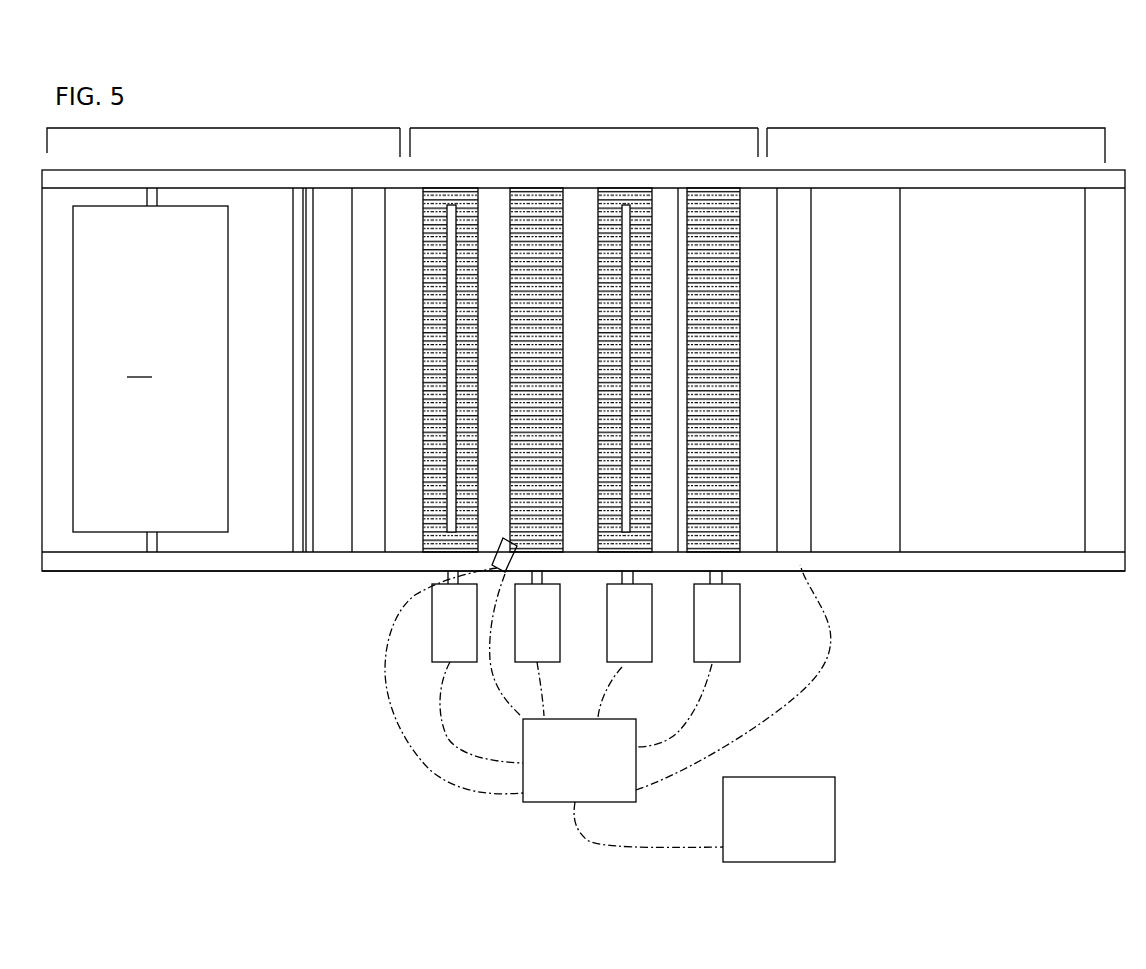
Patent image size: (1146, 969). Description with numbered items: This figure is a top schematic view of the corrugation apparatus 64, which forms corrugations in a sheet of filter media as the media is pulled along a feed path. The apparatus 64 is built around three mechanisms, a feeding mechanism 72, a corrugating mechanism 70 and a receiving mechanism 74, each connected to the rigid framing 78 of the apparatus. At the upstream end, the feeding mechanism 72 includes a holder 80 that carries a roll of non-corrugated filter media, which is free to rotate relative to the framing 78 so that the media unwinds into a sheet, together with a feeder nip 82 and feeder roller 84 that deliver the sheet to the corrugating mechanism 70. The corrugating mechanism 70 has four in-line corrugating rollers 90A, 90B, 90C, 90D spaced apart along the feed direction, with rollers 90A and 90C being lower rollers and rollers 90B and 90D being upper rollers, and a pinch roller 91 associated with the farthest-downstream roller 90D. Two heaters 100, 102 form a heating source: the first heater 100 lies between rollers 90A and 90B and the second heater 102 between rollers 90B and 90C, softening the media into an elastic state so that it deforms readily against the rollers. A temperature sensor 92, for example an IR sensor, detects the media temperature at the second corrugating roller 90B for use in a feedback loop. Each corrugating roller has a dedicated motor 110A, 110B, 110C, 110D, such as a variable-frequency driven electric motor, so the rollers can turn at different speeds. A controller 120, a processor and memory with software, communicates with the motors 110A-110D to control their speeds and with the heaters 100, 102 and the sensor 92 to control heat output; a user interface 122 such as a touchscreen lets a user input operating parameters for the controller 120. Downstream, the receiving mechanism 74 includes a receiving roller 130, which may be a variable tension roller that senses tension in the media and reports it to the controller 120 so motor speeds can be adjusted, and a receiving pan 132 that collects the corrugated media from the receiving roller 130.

The corrugation apparatus 64 is at (103, 677).
The corrugating mechanism 70 is at (553, 130).
The feeding mechanism 72 is at (245, 128).
The receiving mechanism 74 is at (930, 128).
The rigid framing 78 is at (863, 558).
The holder 80 is at (160, 541).
The feeder nip 82 is at (293, 428).
The feeder roller 84 is at (352, 457).
The first corrugating roller 90A is at (405, 343).
The second corrugating roller 90B is at (523, 243).
The third corrugating roller 90C is at (831, 351).
The fourth corrugating roller 90D is at (732, 468).
The pinch roller 91 is at (683, 285).
The temperature sensor 92 is at (500, 554).
The first heater 100 is at (450, 278).
The second heater 102 is at (627, 258).
The first motor 110A is at (477, 667).
The second motor 110B is at (537, 643).
The third motor 110C is at (625, 644).
The fourth motor 110D is at (688, 659).
The controller 120 is at (588, 772).
The user interface 122 is at (800, 832).
The receiving roller 130 is at (800, 283).
The receiving pan 132 is at (1010, 332).